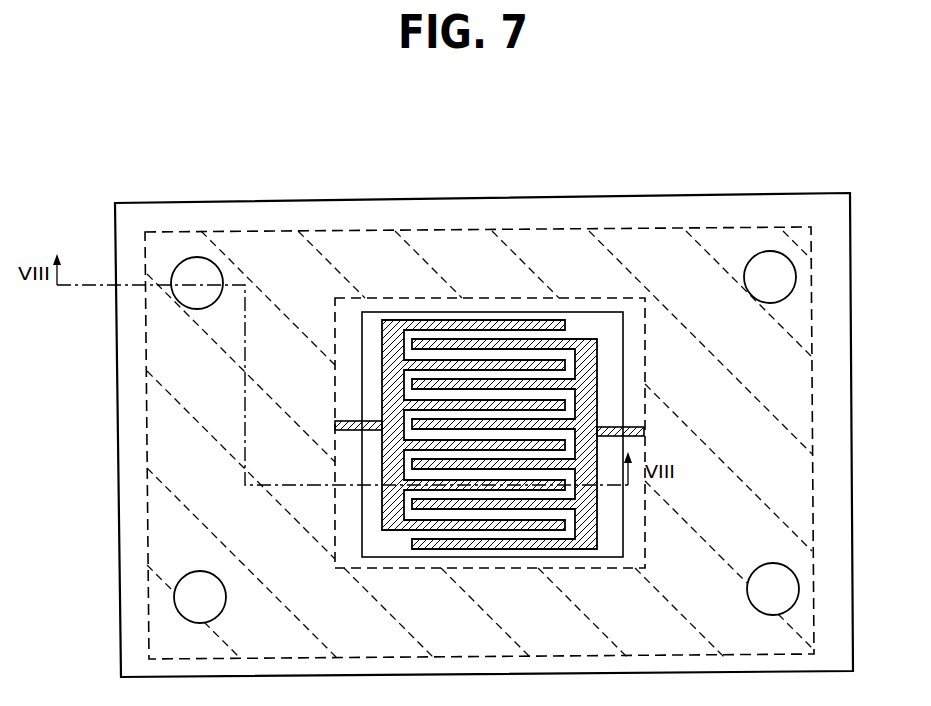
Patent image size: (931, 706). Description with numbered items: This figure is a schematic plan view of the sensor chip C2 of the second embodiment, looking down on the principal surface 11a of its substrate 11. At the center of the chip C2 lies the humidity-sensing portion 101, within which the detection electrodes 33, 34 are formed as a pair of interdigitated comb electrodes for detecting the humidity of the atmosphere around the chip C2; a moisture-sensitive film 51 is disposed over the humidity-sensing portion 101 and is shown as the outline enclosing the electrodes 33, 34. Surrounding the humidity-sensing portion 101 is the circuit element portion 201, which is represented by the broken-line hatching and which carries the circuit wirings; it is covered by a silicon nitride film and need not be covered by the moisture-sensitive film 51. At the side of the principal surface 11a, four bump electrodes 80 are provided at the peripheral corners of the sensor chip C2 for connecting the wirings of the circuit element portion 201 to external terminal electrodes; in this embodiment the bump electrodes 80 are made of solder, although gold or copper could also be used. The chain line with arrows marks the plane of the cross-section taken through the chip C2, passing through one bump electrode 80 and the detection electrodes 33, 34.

The semiconductor substrate 11 is at (704, 194).
The principal surface 11a is at (202, 226).
The circuit element portion 201 is at (292, 224).
The bump electrodes 80 is at (187, 271).
The humidity-sensing portion 101 is at (606, 322).
The moisture-sensitive film 51 is at (487, 310).
The detection electrode 33 is at (420, 318).
The detection electrode 34 is at (541, 337).
The sensor chip C2 is at (768, 163).